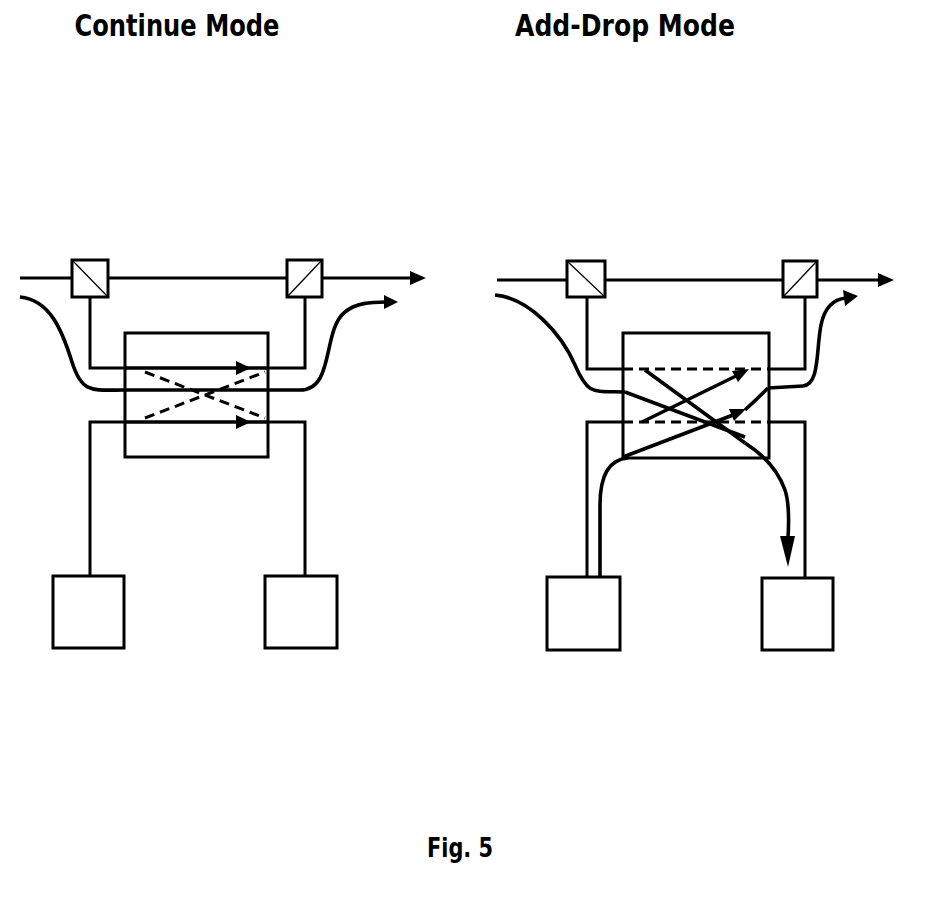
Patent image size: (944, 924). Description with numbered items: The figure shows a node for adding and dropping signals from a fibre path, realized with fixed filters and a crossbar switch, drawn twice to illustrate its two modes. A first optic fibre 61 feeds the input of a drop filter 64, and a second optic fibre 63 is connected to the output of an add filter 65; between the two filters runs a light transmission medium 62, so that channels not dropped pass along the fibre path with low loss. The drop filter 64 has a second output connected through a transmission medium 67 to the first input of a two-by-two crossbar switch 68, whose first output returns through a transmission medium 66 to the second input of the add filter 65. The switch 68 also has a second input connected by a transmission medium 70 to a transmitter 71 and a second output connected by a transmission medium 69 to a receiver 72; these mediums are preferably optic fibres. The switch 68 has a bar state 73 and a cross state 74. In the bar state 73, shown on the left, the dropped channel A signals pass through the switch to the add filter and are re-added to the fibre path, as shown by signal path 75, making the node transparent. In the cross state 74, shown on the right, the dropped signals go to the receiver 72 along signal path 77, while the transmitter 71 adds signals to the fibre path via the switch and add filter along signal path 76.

The first optic fibre 61 is at (536, 157).
The light transmission medium 62 is at (680, 142).
The second optic fibre 63 is at (806, 157).
The drop filter 64 is at (608, 140).
The add filter 65 is at (752, 140).
The transmission medium 66 is at (857, 337).
The transmission medium 67 is at (583, 317).
The crossbar switch 68 is at (857, 392).
The transmission medium 69 is at (858, 478).
The transmission medium 70 is at (587, 510).
The transmitter 71 is at (540, 712).
The receiver 72 is at (775, 700).
The bar state 73 is at (197, 415).
The cross state 74 is at (695, 392).
The signal path 75 is at (376, 298).
The signal path 76 is at (858, 298).
The signal path 77 is at (782, 530).